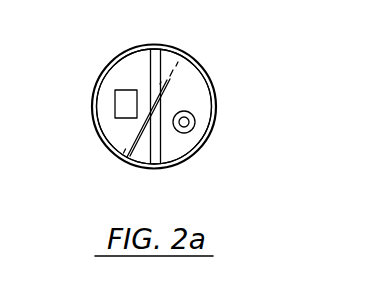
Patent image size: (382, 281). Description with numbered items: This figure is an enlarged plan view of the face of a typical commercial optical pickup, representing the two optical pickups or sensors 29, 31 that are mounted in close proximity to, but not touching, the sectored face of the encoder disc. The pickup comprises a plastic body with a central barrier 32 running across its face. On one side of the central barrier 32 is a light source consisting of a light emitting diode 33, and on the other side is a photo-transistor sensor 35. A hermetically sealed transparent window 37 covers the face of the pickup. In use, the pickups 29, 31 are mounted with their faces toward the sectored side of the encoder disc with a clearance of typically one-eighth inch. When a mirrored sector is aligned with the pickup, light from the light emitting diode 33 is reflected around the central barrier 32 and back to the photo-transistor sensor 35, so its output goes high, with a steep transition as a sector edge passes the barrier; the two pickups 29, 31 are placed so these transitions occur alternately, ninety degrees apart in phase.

The optical pickup 29 is at (215, 78).
The optical pickup 31 is at (154, 106).
The central barrier 32 is at (152, 142).
The light emitting diode 33 is at (187, 123).
The photo-transistor sensor 35 is at (121, 102).
The transparent window 37 is at (178, 142).